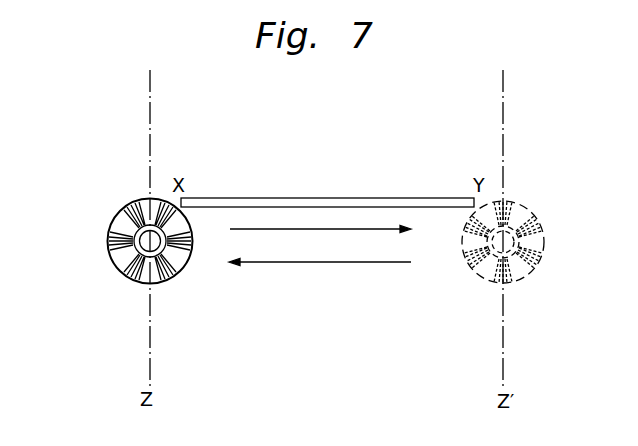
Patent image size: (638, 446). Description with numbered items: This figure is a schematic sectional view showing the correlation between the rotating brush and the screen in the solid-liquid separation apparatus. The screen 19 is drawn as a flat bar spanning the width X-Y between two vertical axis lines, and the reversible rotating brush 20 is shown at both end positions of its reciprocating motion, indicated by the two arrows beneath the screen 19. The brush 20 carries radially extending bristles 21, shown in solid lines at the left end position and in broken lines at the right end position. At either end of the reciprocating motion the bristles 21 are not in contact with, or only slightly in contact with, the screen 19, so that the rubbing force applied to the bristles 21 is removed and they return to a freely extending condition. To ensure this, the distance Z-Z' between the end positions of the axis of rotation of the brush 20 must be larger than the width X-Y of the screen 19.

The screen 19 is at (292, 198).
The reversible rotating brush 20 is at (108, 264).
The bristles 21 is at (178, 264).